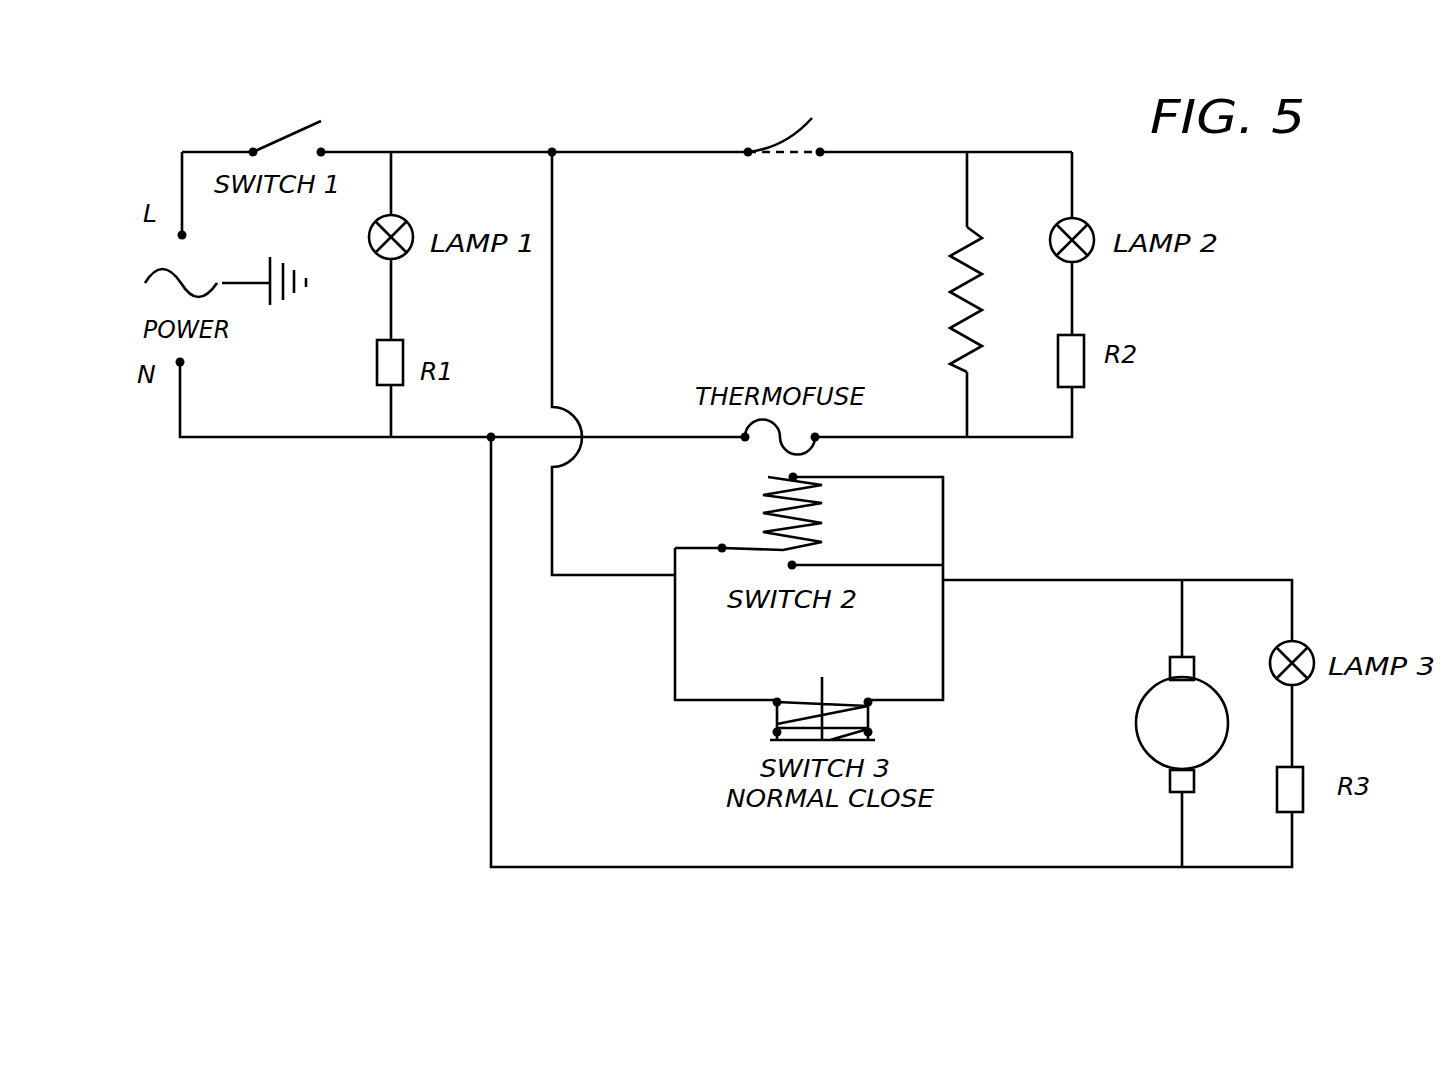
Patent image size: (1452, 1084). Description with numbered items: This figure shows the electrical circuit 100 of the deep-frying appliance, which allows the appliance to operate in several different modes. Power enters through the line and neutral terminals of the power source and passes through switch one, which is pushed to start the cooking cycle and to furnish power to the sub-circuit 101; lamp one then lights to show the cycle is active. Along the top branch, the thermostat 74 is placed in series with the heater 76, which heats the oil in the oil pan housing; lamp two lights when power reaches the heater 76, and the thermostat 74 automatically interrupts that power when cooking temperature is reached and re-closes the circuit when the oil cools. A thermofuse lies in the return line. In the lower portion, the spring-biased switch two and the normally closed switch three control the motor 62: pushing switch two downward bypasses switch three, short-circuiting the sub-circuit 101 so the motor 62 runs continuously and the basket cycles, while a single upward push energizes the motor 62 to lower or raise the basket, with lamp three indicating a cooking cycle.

The electrical circuit 100 is at (1318, 447).
The sub-circuit 101 is at (498, 152).
The thermostat 74 is at (788, 142).
The heater 76 is at (953, 322).
The motor 62 is at (1140, 745).